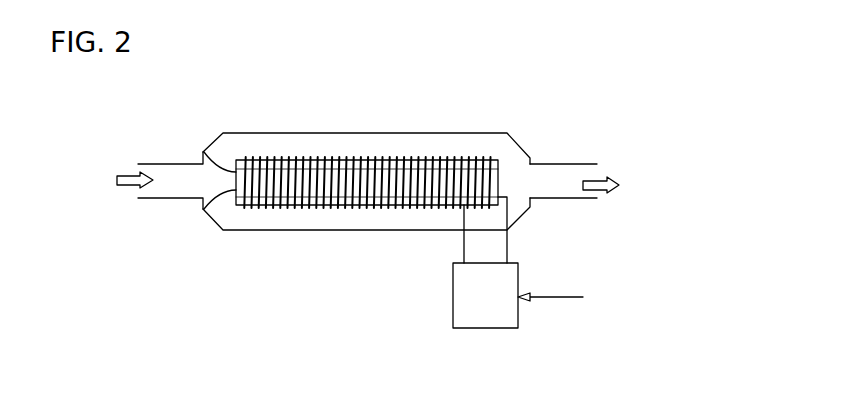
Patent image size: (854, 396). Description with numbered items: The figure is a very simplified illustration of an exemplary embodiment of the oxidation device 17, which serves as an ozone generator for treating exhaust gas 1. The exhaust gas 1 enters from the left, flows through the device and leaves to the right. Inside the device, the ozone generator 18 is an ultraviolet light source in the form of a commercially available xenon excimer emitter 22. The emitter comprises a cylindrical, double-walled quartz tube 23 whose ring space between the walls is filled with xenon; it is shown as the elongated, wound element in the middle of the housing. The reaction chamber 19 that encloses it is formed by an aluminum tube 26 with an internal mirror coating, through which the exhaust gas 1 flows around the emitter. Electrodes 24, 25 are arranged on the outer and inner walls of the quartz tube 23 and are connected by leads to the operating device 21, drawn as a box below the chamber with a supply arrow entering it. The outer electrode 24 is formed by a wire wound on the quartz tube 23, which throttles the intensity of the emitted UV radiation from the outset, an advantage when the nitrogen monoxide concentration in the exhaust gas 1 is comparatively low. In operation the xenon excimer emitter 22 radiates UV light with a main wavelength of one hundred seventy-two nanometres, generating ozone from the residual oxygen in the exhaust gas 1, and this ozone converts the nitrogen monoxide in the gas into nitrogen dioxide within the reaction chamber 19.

The exhaust gas 1 is at (122, 172).
The oxidation device 17 is at (295, 267).
The ozone generator 18 is at (367, 146).
The reaction chamber 19 is at (366, 163).
The operating device 21 is at (452, 297).
The xenon excimer emitter 22 is at (388, 150).
The quartz tube 23 is at (229, 151).
The outer electrode 24 is at (212, 213).
The inner electrode 25 is at (492, 192).
The aluminum tube 26 is at (309, 132).